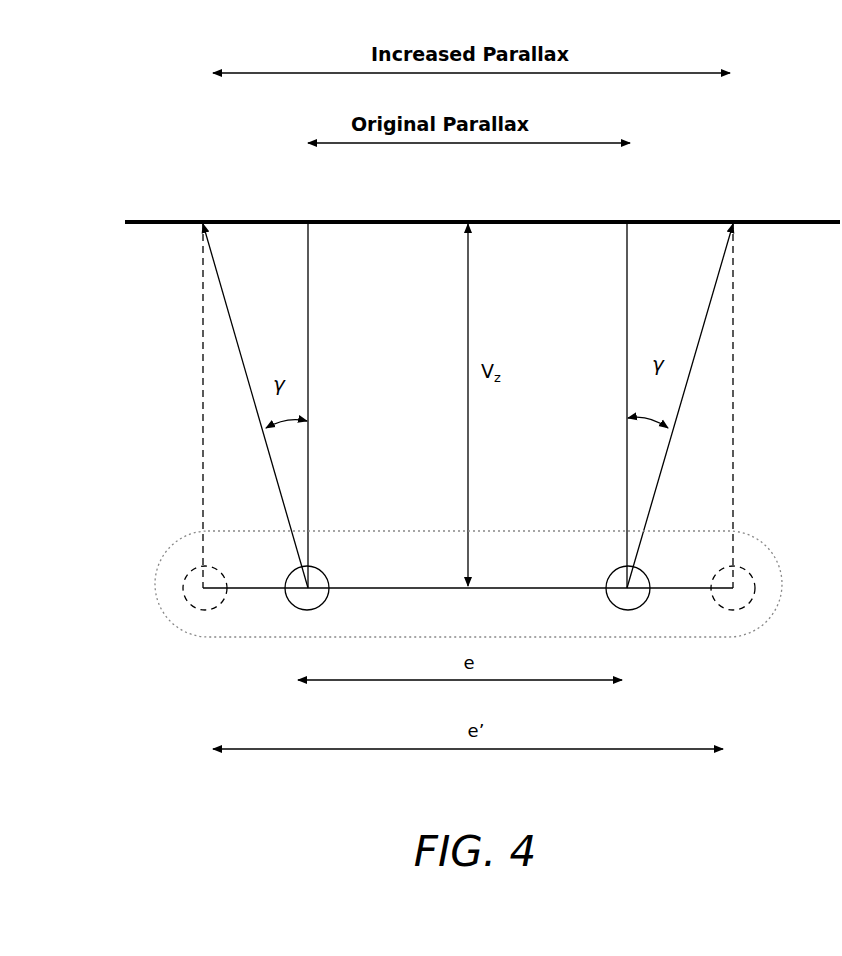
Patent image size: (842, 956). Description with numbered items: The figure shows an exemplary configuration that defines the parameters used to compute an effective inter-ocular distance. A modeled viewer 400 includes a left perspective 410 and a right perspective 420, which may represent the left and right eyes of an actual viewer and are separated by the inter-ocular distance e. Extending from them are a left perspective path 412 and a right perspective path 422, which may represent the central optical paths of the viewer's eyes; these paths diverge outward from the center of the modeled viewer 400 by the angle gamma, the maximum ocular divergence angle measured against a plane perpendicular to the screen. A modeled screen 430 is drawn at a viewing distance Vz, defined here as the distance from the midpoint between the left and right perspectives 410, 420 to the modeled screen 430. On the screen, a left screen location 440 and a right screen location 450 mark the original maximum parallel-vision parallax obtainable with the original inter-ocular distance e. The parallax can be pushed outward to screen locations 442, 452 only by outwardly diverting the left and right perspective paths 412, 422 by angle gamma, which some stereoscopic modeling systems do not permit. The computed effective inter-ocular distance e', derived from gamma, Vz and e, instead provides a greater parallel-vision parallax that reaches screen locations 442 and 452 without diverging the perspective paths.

The modeled viewer 400 is at (525, 569).
The left perspective 410 is at (300, 618).
The left perspective path 412 is at (251, 402).
The right perspective 420 is at (637, 617).
The right perspective path 422 is at (696, 372).
The modeled screen 430 is at (483, 186).
The left screen location 440 is at (306, 215).
The left screen location 442 is at (203, 220).
The right screen location 450 is at (628, 215).
The right screen location 452 is at (735, 220).